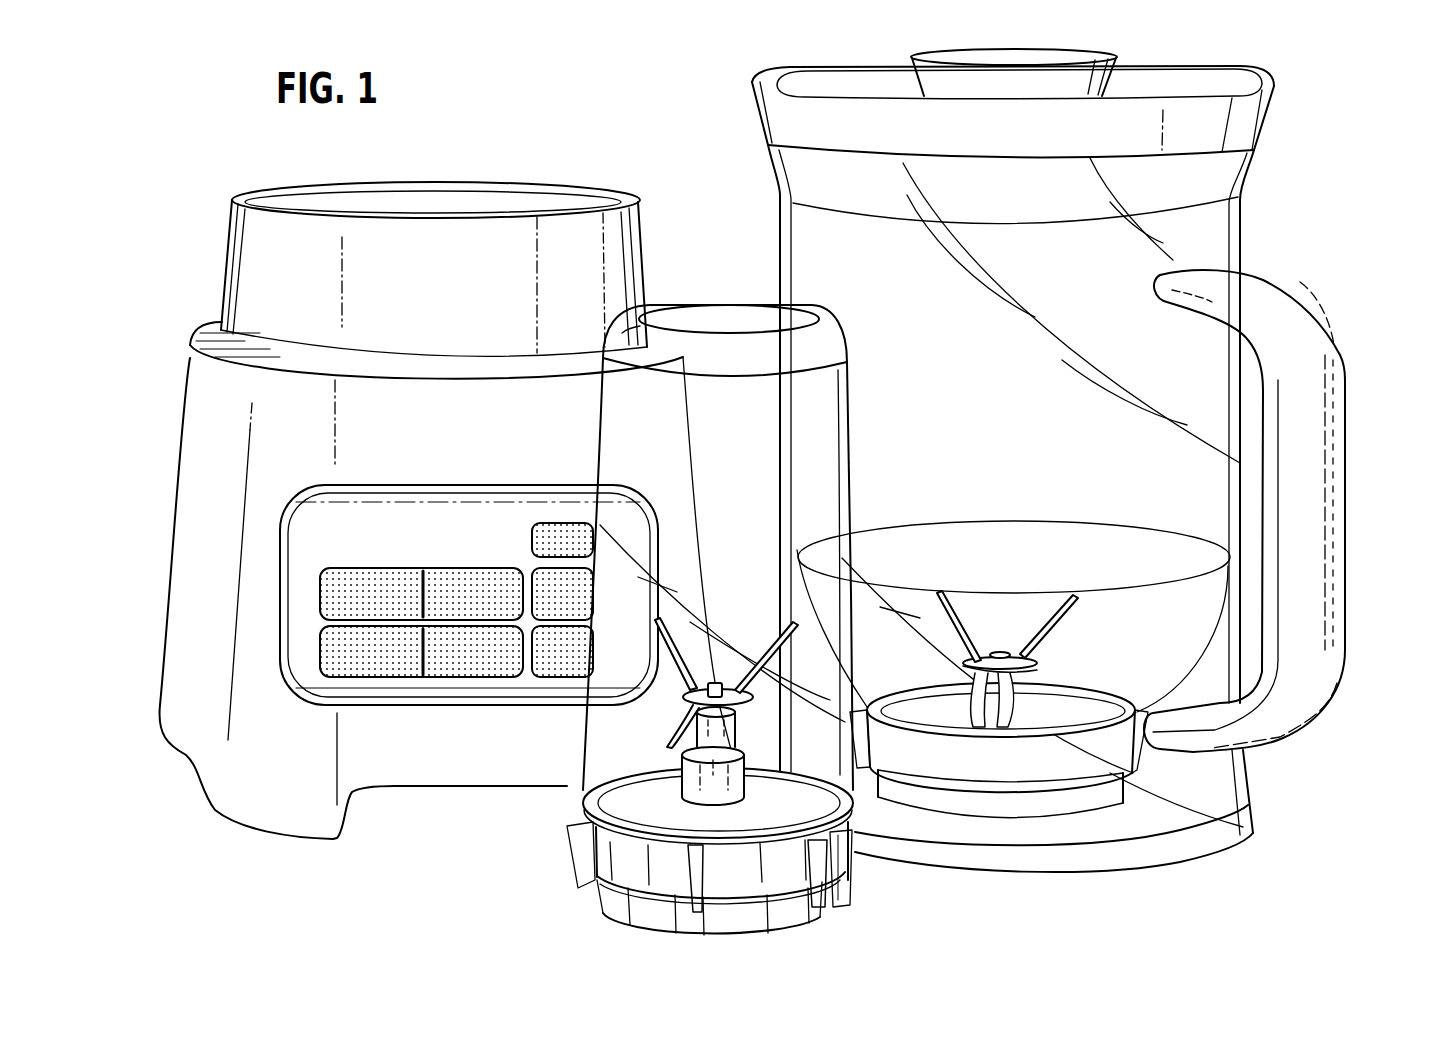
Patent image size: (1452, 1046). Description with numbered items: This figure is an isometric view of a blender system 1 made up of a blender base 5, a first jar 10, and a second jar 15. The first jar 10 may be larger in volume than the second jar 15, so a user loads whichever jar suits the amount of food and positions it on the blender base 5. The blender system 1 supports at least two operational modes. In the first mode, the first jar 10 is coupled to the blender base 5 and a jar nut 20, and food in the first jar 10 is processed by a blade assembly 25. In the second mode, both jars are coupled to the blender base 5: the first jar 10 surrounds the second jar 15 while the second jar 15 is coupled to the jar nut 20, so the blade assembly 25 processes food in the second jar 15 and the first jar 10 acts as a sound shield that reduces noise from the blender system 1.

The blender system 1 is at (131, 766).
The blender base 5 is at (169, 278).
The first jar 10 is at (1300, 253).
The second jar 15 is at (706, 277).
The jar nut 20 is at (867, 915).
The blade assembly 25 is at (648, 705).